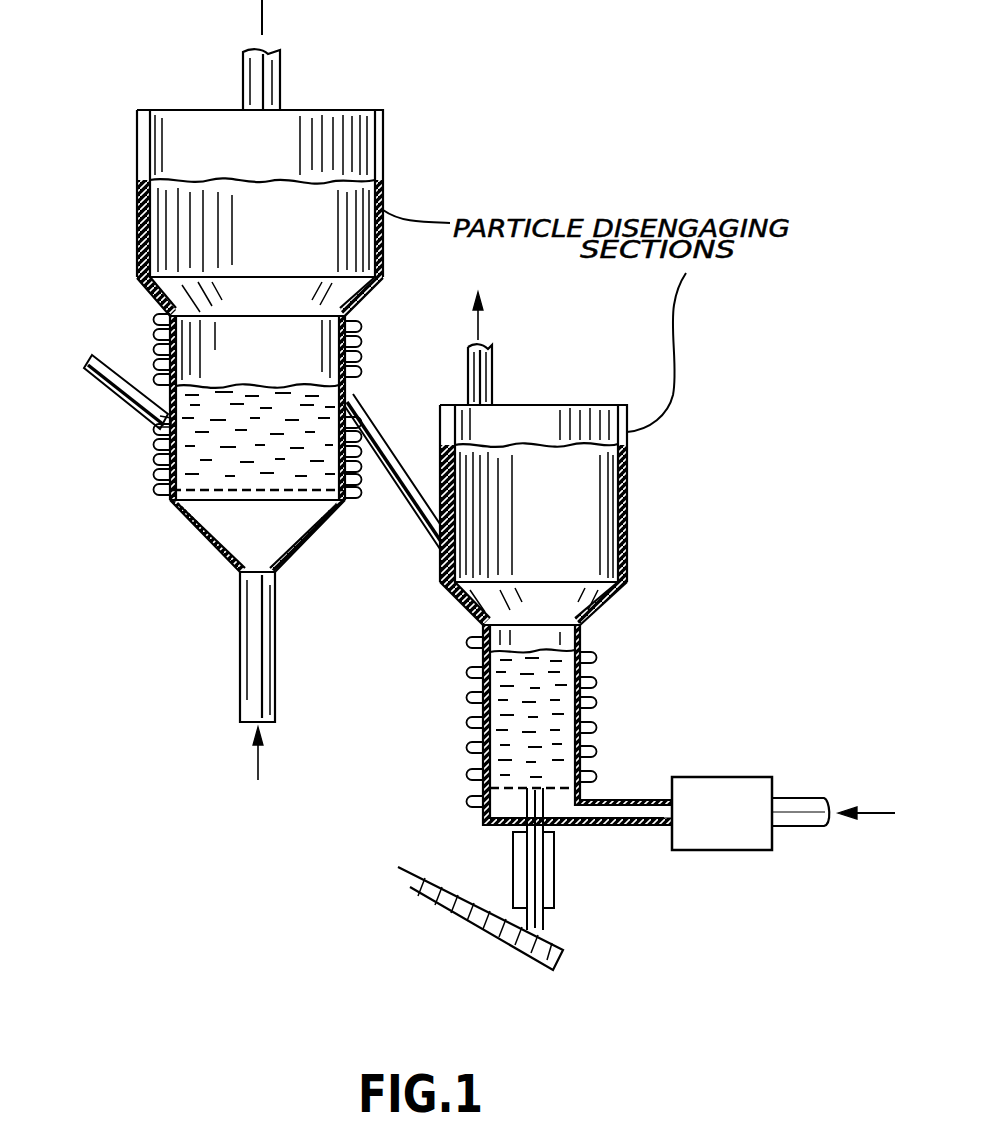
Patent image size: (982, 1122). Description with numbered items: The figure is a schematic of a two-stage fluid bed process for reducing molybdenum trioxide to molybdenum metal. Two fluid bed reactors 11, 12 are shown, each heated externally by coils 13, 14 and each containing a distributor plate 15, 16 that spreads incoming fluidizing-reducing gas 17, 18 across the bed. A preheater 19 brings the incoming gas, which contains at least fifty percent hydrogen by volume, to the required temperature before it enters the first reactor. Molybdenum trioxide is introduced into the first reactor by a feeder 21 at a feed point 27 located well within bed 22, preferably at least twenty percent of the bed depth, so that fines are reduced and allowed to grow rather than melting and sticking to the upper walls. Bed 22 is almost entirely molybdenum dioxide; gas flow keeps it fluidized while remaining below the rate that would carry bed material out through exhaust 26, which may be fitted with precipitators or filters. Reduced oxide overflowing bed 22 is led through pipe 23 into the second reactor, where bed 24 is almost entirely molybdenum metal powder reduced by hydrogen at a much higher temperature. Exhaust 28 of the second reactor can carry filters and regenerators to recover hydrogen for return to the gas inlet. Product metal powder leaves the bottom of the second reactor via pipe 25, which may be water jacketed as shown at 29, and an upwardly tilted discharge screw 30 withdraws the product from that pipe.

The fluid bed reactor 11 is at (188, 516).
The fluid bed reactor 12 is at (468, 612).
The coils 13 is at (156, 331).
The coils 14 is at (470, 733).
The distributor plate 15 is at (245, 492).
The distributor plate 16 is at (565, 784).
The fluidizing-reducing gas 17 is at (258, 766).
The fluidizing-reducing gas 18 is at (878, 813).
The preheater 19 is at (735, 826).
The feeder 21 is at (106, 386).
The bed 22 is at (202, 452).
The pipe 23 is at (382, 435).
The bed 24 is at (552, 694).
The pipe 25 is at (538, 880).
The exhaust 26 is at (262, 10).
The feed point 27 is at (158, 422).
The exhaust 28 is at (483, 326).
The water jacket 29 is at (553, 900).
The discharge screw 30 is at (410, 882).